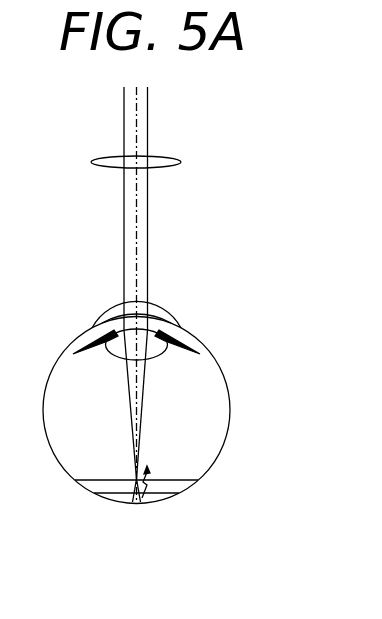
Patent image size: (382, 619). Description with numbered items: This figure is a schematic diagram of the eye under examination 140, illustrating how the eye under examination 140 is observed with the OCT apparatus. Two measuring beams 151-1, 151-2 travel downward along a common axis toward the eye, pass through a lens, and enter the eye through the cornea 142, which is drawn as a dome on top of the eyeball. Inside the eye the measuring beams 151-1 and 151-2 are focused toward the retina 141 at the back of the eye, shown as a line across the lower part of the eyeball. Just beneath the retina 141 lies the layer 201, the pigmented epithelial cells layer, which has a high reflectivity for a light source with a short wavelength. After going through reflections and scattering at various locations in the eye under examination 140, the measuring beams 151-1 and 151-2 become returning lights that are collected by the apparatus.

The eye under examination 140 is at (227, 432).
The retina 141 is at (198, 480).
The cornea 142 is at (172, 304).
The measuring beam 151-1 is at (137, 107).
The measuring beam 151-2 is at (148, 139).
The layer 201 is at (175, 493).